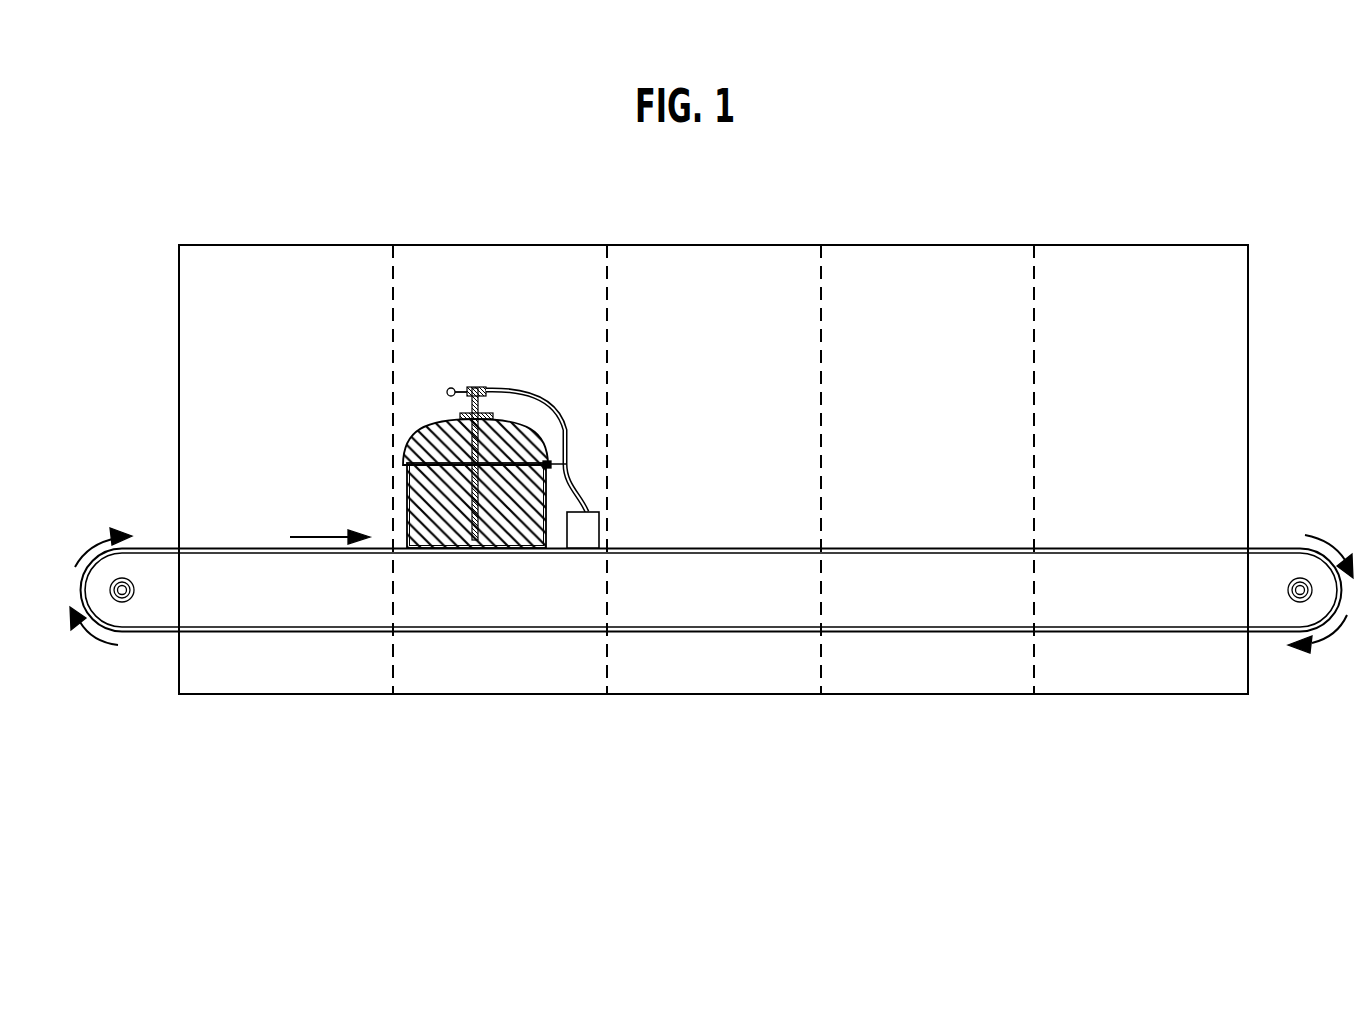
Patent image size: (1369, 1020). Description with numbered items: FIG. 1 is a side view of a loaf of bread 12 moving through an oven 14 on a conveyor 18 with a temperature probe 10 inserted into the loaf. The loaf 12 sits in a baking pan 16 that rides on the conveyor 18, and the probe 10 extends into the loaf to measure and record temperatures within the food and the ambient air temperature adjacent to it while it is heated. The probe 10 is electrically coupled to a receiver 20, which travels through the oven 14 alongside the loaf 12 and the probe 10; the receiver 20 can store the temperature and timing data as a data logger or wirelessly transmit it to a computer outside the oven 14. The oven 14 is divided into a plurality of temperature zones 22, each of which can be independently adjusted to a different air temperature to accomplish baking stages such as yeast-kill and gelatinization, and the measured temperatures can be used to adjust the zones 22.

The probe 10 is at (475, 388).
The loaf of bread 12 is at (420, 428).
The oven 14 is at (1210, 172).
The baking pan 16 is at (408, 490).
The conveyor 18 is at (700, 548).
The receiver 20 is at (601, 527).
The temperature zones 22 is at (270, 245).